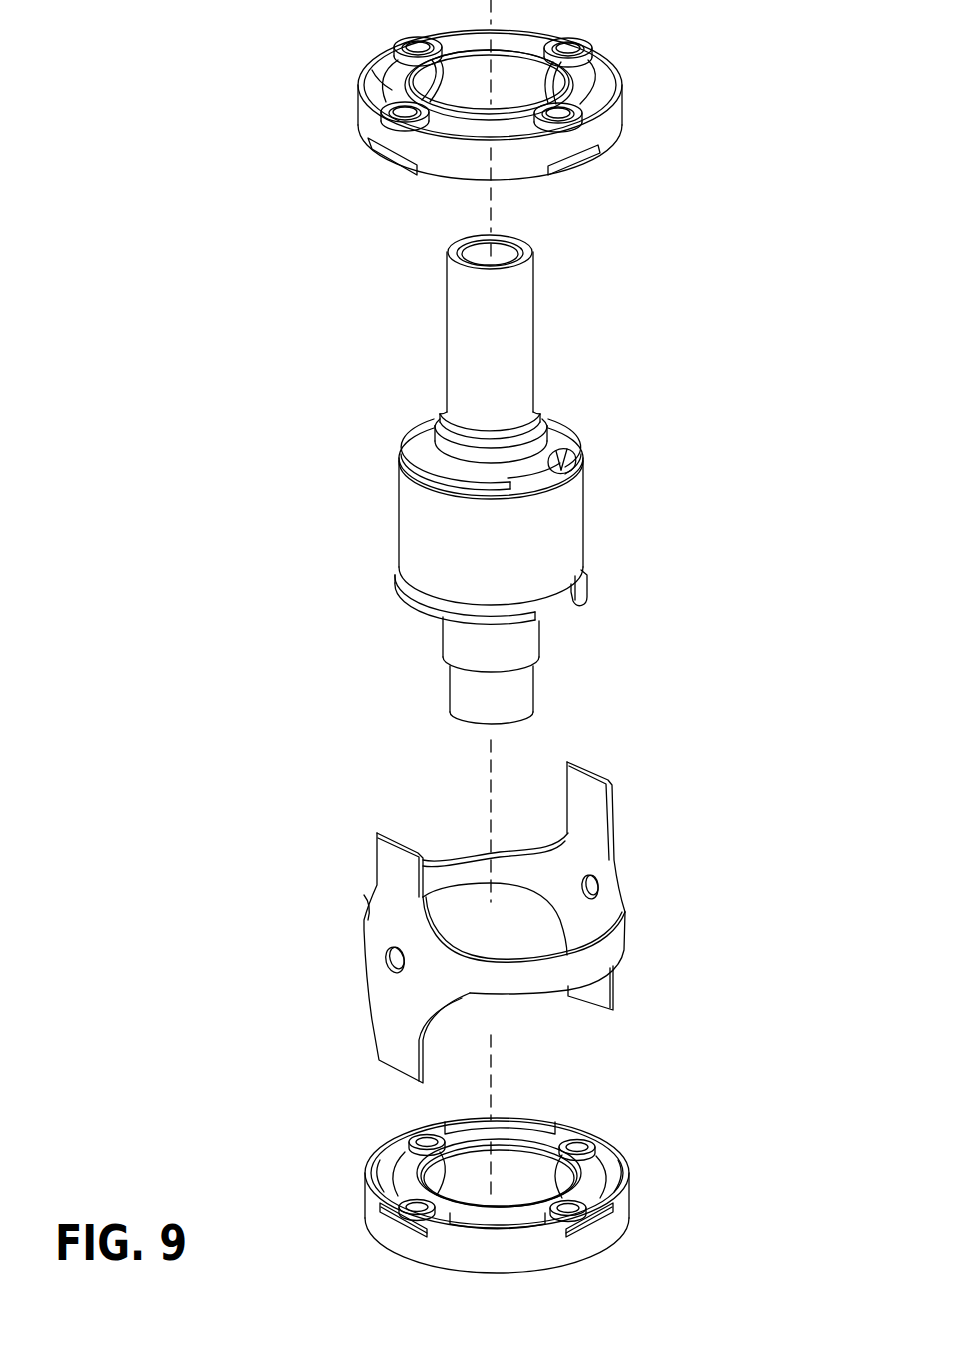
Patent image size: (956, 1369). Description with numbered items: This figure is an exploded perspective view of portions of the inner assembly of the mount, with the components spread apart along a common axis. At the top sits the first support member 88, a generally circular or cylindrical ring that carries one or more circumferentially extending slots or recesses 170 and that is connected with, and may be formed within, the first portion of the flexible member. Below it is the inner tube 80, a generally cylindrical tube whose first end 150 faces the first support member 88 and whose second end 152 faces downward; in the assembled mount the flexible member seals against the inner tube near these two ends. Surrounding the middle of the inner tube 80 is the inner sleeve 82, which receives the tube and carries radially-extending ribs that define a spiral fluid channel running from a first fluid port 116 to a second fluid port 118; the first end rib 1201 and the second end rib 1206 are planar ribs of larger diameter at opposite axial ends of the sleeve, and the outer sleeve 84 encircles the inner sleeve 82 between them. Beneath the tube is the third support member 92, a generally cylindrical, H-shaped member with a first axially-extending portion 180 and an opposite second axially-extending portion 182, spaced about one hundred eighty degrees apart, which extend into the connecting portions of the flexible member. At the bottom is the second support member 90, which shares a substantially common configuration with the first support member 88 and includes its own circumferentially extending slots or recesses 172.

The first support member 88 is at (498, 105).
The circumferentially extending slots or recesses 170 is at (393, 80).
The first end of inner tube 150 is at (551, 317).
The inner tube 80 is at (515, 328).
The inner sleeve 82 is at (560, 422).
The first fluid port 116 is at (562, 455).
The first end rib 1201 is at (491, 436).
The outer sleeve 84 is at (488, 525).
The second end rib 1206 is at (481, 619).
The second fluid port 118 is at (557, 607).
The second end of inner tube 152 is at (558, 697).
The third support member 92 is at (492, 922).
The first axially-extending portion 180 is at (393, 1032).
The second axially-extending portion 182 is at (598, 987).
The second support member 90 is at (542, 1175).
The circumferentially extending slots or recesses 172 is at (597, 1175).